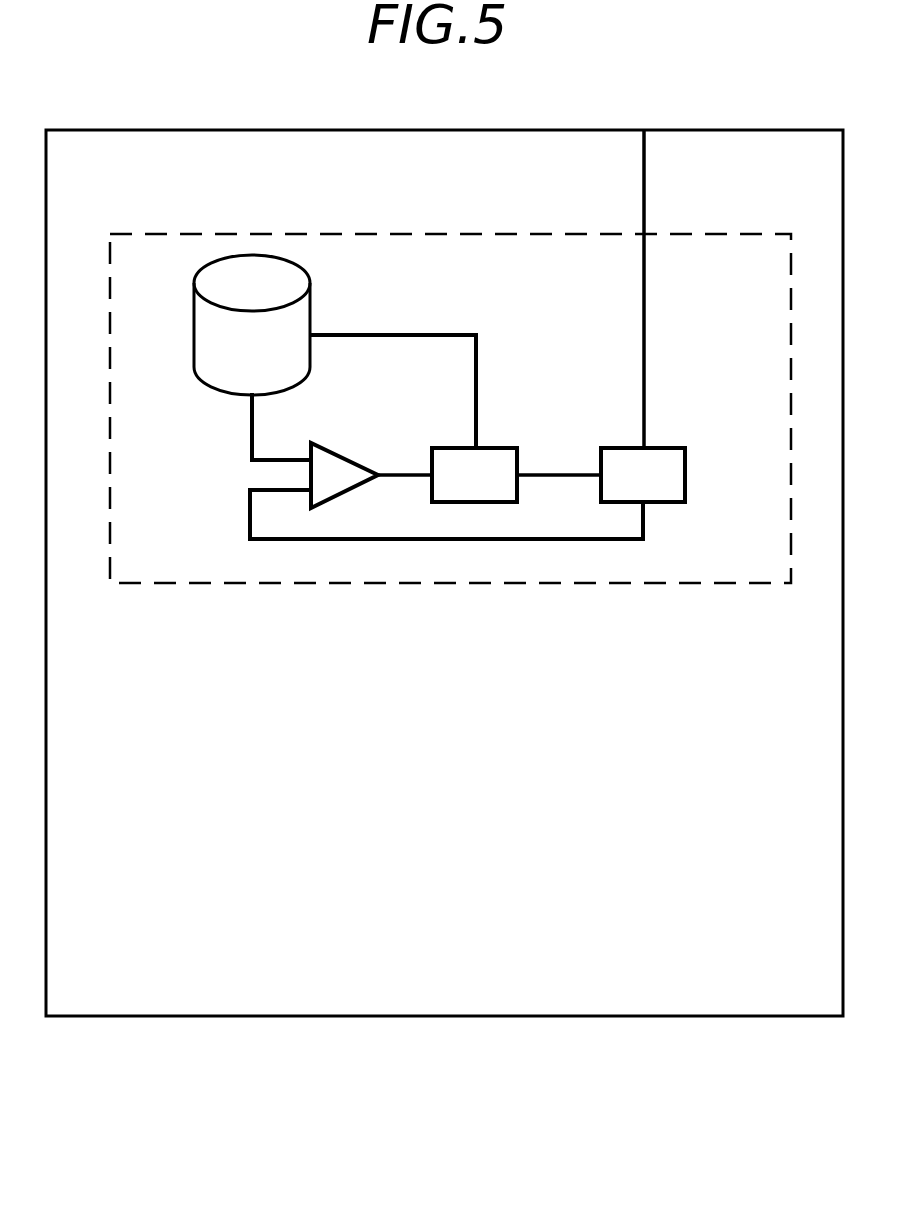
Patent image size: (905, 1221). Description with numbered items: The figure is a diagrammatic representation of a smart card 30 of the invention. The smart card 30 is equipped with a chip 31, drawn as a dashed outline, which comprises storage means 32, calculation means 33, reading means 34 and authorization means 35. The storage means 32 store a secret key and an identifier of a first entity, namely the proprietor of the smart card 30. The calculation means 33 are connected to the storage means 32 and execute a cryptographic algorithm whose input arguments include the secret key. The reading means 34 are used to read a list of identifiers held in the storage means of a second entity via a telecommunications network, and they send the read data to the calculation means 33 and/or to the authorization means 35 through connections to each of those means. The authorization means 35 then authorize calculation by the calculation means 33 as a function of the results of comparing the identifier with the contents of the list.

The smart card 30 is at (430, 985).
The chip 31 is at (455, 570).
The storage means 32 is at (203, 338).
The calculation means 33 is at (494, 455).
The reading means 34 is at (690, 478).
The authorization means 35 is at (340, 465).